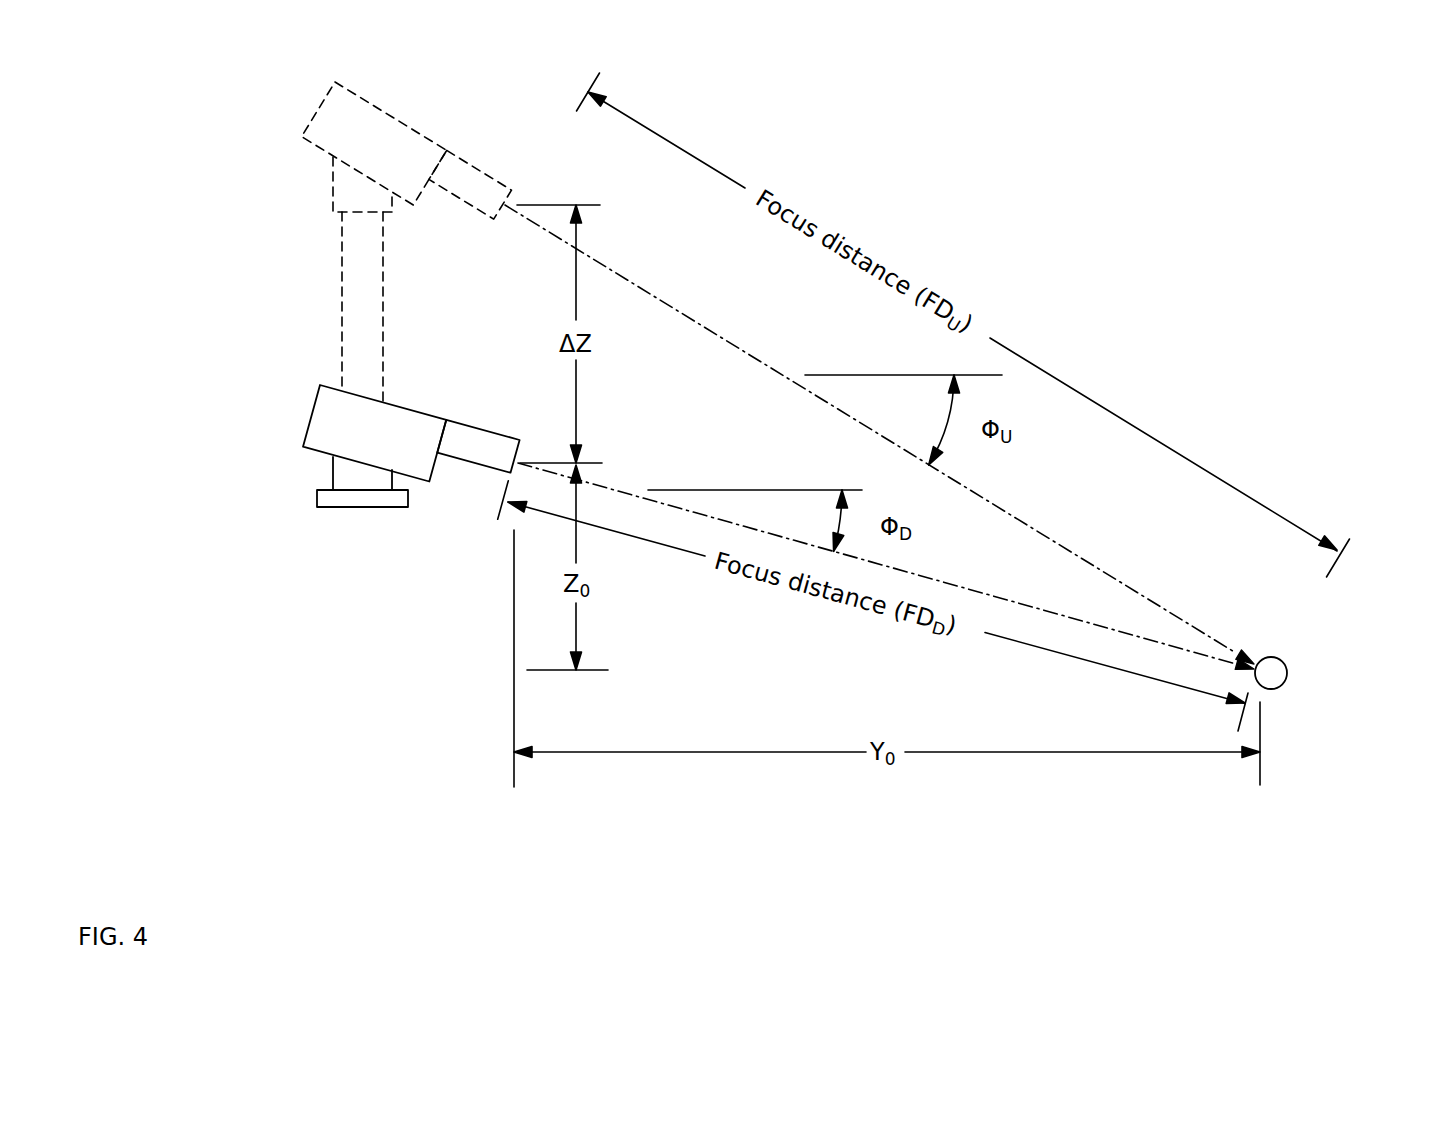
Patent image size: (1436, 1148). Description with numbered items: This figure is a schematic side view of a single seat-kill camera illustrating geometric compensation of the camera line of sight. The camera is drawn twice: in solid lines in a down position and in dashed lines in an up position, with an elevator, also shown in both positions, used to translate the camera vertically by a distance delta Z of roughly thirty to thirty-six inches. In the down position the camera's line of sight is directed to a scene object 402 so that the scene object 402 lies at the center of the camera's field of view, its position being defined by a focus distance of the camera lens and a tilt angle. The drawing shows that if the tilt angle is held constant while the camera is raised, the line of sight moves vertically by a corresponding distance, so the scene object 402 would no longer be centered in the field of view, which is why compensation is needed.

The scene object 402 is at (1273, 658).